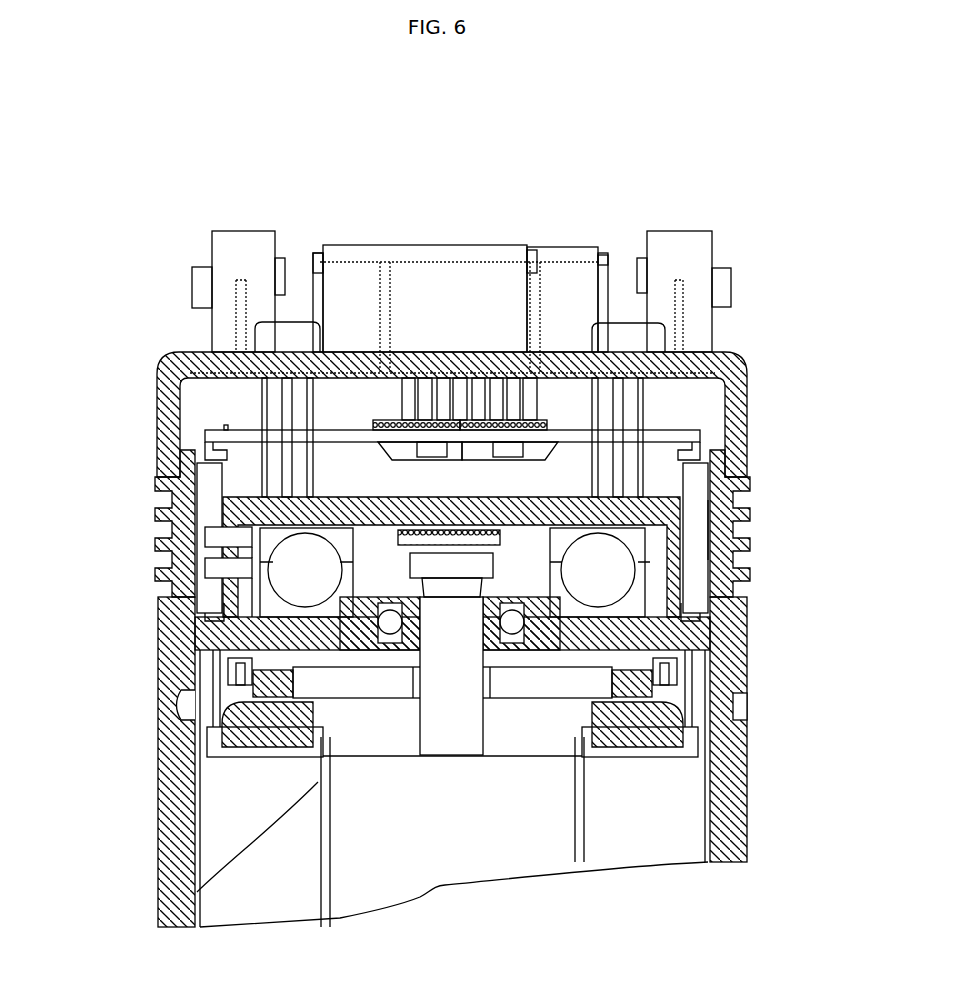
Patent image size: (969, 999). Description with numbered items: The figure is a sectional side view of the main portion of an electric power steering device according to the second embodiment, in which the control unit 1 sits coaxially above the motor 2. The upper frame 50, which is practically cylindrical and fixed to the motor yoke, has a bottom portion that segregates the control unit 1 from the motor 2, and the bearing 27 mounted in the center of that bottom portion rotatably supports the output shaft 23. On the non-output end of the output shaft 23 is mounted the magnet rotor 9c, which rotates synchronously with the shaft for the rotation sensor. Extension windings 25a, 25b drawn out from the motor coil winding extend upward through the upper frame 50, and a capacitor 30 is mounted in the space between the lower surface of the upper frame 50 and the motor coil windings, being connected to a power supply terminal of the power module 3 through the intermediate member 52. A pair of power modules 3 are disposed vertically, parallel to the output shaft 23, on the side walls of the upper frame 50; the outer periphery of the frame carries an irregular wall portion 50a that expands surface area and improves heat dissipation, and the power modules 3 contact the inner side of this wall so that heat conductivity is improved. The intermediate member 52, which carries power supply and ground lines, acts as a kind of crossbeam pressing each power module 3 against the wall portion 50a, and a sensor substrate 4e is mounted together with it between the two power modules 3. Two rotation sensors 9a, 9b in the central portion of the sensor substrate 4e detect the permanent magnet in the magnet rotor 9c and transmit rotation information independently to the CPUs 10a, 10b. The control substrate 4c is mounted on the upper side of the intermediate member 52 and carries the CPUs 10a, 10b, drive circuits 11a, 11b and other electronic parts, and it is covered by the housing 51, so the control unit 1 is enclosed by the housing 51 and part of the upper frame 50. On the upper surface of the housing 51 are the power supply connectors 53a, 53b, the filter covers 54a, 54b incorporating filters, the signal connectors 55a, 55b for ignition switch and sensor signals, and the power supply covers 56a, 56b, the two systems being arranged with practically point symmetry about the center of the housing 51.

The control unit 1 is at (143, 378).
The motor 2 is at (145, 840).
The power module 3 is at (750, 532).
The control substrate 4c is at (697, 436).
The sensor substrate 4e is at (700, 530).
The rotation sensor 9a is at (197, 590).
The rotation sensor 9b is at (660, 497).
The magnet rotor 9c is at (420, 580).
The CPU 10a is at (540, 421).
The CPU 10b is at (383, 424).
The drive circuit 11a is at (383, 443).
The drive circuit 11b is at (547, 450).
The output shaft 23 is at (415, 705).
The extension winding 25a is at (235, 665).
The extension winding 25b is at (680, 665).
The bearing 27 is at (483, 650).
The capacitor 30 is at (632, 567).
The upper frame 50 is at (157, 673).
The irregular wall portion 50a is at (157, 507).
The housing 51 is at (160, 408).
The intermediate member 52 is at (240, 497).
The power supply connector 53a is at (247, 231).
The power supply connector 53b is at (712, 238).
The filter cover 54a is at (372, 265).
The filter cover 54b is at (580, 262).
The signal connector 55a is at (477, 245).
The signal connector 55b is at (570, 247).
The power supply cover 56a is at (622, 323).
The power supply cover 56b is at (295, 322).